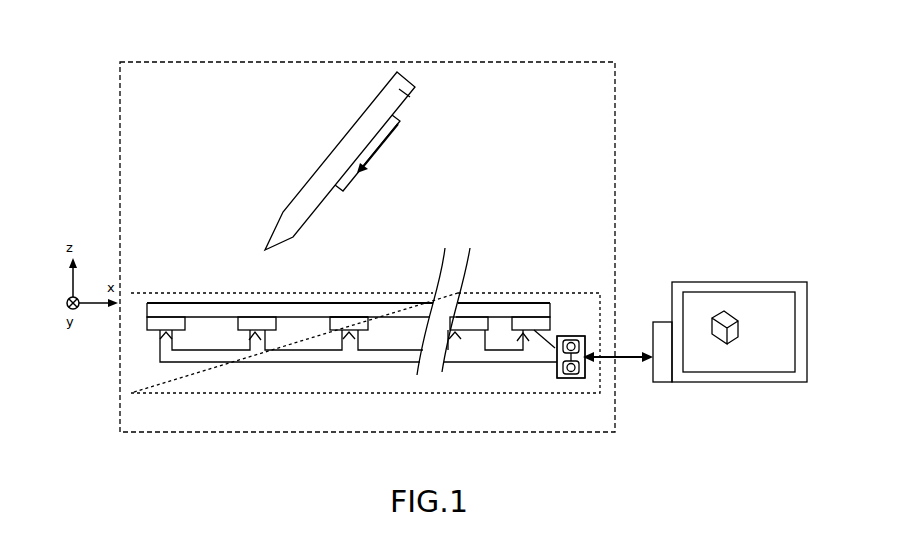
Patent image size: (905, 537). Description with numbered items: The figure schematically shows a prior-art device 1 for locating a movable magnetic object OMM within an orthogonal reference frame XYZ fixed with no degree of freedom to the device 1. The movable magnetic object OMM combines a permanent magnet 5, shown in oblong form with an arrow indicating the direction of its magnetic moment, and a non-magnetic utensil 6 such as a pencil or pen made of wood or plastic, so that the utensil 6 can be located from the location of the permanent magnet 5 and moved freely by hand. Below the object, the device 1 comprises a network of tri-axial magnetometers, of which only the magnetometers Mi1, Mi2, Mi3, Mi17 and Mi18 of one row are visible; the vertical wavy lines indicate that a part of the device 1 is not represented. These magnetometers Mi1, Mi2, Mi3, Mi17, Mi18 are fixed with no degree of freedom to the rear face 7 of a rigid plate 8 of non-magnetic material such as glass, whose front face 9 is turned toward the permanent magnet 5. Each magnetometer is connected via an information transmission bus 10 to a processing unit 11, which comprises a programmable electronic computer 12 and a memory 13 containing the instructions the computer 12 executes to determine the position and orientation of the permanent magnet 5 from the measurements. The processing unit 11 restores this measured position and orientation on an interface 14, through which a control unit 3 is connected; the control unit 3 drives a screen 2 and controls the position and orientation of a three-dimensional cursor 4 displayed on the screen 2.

The movable magnetic object OMM is at (300, 104).
The location device 1 is at (188, 288).
The screen 2 is at (718, 274).
The control unit 3 is at (663, 377).
The cursor 4 is at (734, 318).
The permanent magnet 5 is at (400, 136).
The non-magnetic utensil 6 is at (412, 95).
The rear face 7 is at (498, 324).
The rigid plate 8 is at (546, 298).
The front face 9 is at (345, 312).
The information transmission bus 10 is at (256, 342).
The processing unit 11 is at (550, 372).
The programmable electronic computer 12 is at (577, 336).
The memory 13 is at (577, 379).
The interface 14 is at (588, 351).
The tri-axial magnetometer Mi1 is at (166, 340).
The tri-axial magnetometer Mi2 is at (271, 317).
The tri-axial magnetometer Mi3 is at (350, 330).
The tri-axial magnetometer Mi17 is at (456, 330).
The tri-axial magnetometer Mi18 is at (520, 331).